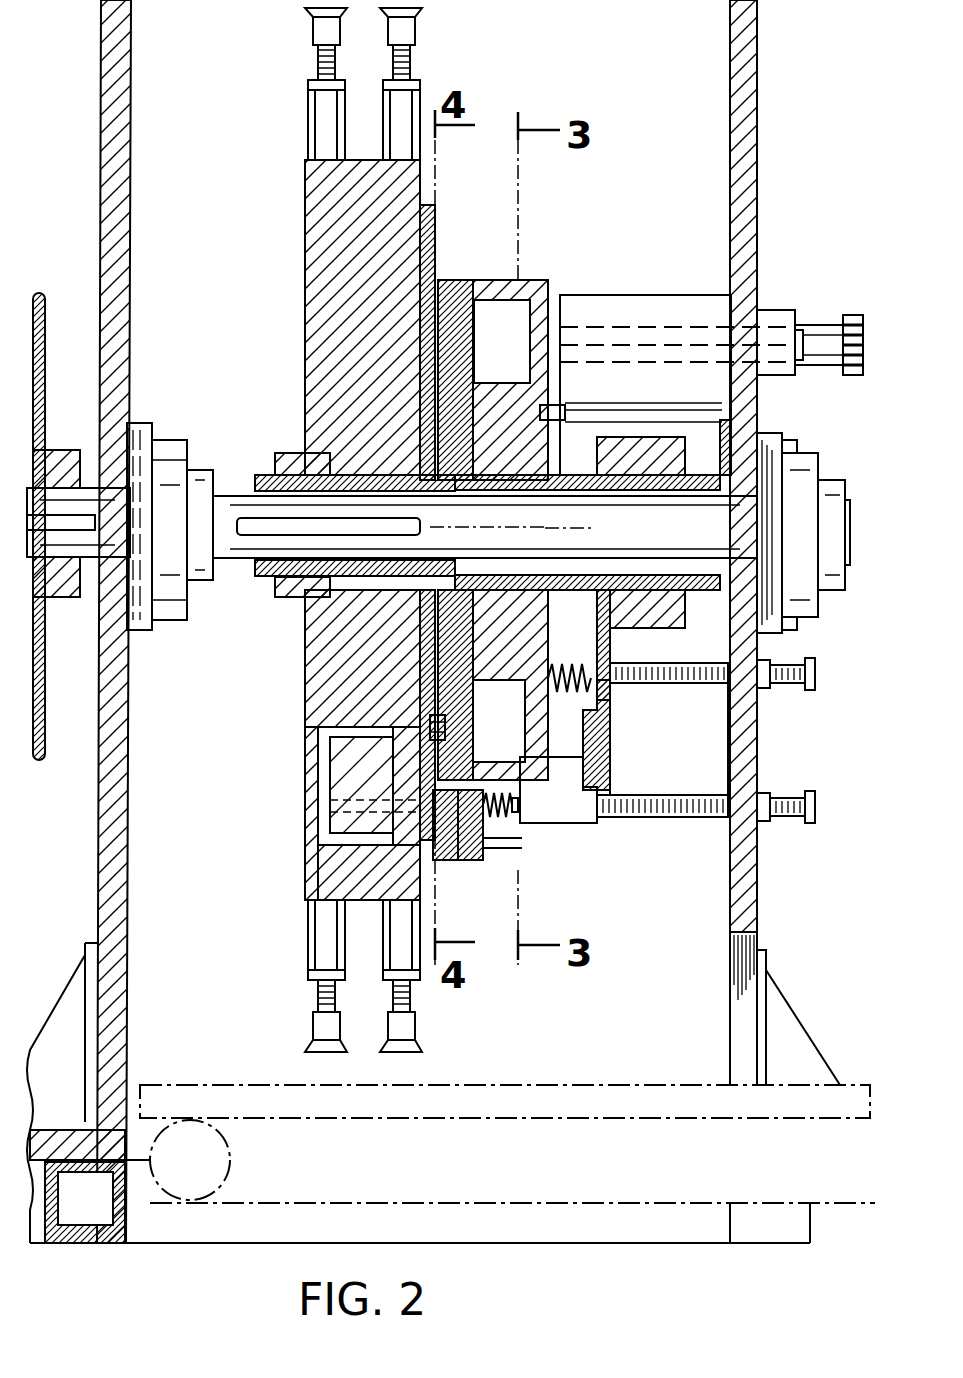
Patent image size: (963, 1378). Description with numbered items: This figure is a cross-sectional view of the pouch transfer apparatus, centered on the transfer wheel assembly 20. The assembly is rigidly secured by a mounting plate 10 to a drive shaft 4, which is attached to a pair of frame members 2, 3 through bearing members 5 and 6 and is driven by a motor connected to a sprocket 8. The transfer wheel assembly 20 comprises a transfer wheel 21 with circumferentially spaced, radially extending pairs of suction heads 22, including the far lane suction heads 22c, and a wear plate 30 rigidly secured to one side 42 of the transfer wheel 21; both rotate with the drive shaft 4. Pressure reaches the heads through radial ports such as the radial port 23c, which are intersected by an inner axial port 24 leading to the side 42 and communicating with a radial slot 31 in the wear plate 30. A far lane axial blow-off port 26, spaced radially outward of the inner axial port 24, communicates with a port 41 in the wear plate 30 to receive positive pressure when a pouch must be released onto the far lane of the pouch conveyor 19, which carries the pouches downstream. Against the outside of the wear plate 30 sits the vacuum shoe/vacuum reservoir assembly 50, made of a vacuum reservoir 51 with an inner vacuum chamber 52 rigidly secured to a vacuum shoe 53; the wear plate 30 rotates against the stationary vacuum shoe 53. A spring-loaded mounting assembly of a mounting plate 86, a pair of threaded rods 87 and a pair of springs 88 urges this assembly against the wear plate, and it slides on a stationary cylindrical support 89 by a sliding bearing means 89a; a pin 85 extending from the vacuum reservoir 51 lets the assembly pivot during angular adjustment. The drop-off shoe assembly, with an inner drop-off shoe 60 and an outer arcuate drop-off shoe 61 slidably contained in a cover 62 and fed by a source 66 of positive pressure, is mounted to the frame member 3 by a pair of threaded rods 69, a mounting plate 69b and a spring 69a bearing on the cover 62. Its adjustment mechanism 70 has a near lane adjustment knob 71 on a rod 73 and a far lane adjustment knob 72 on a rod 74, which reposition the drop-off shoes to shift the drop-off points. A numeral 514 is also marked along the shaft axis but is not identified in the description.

The frame member 2 is at (118, 62).
The frame member 3 is at (757, 87).
The drive shaft 4 is at (236, 490).
The bearing member 5 is at (194, 440).
The bearing member 6 is at (828, 464).
The sprocket 8 is at (47, 690).
The mounting plate 10 is at (290, 452).
The pouch conveyor 19 is at (540, 1082).
The transfer wheel assembly 20 is at (330, 440).
The transfer wheel 21 is at (331, 263).
The pair of suction heads 22 is at (438, 24).
The far lane suction heads 22c is at (385, 1042).
The radial port 23c is at (330, 748).
The inner axial port 24 is at (327, 799).
The far lane axial blow-off port 26 is at (330, 805).
The wear plate 30 is at (440, 252).
The radial slot 31 is at (432, 720).
The port 41 is at (369, 872).
The side of the transfer wheel 42 is at (437, 192).
The vacuum shoe/vacuum reservoir assembly 50 is at (525, 493).
The vacuum reservoir 51 is at (506, 282).
The inner vacuum chamber 52 is at (502, 341).
The vacuum shoe 53 is at (455, 514).
The inner drop-off shoe 60 is at (420, 786).
The outer arcuate drop-off shoe 61 is at (455, 862).
The cover 62 is at (483, 870).
The source of positive pressure 66 is at (510, 815).
The threaded rods 69 is at (705, 820).
The spring 69a is at (520, 820).
The mounting plate 69b is at (595, 822).
The adjustment mechanism 70 is at (675, 353).
The near lane adjustment knob 71 is at (850, 312).
The far lane adjustment knob 72 is at (825, 380).
The rod 73 is at (630, 330).
The rod 74 is at (640, 368).
The pin 85 is at (570, 420).
The mounting plate 86 is at (612, 730).
The threaded rods 87 is at (658, 698).
The springs 88 is at (596, 660).
The stationary cylindrical support 89 is at (660, 576).
The sliding bearing means 89a is at (604, 604).
The shaft axis 514 is at (591, 527).